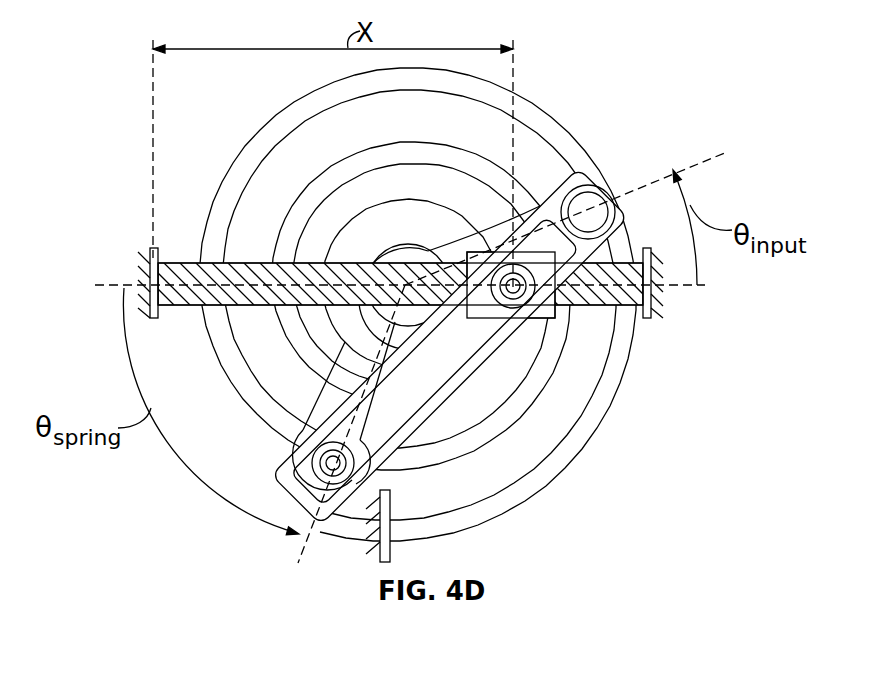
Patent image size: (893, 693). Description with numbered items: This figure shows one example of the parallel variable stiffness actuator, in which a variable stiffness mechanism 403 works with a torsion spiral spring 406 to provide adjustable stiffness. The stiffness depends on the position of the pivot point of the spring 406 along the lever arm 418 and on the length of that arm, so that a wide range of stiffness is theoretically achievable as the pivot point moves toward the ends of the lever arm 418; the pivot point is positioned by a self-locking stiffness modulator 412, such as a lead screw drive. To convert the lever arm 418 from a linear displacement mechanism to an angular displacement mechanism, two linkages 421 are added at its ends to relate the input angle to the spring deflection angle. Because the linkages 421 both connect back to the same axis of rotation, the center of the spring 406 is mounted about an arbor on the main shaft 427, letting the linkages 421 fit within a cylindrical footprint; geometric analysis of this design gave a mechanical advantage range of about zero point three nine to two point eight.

The variable stiffness mechanism 403 is at (568, 95).
The spring 406 is at (573, 462).
The stiffness modulator 412 is at (598, 318).
The lever arm 418 is at (598, 184).
The linkages 421 is at (468, 185).
The main shaft 427 is at (368, 262).